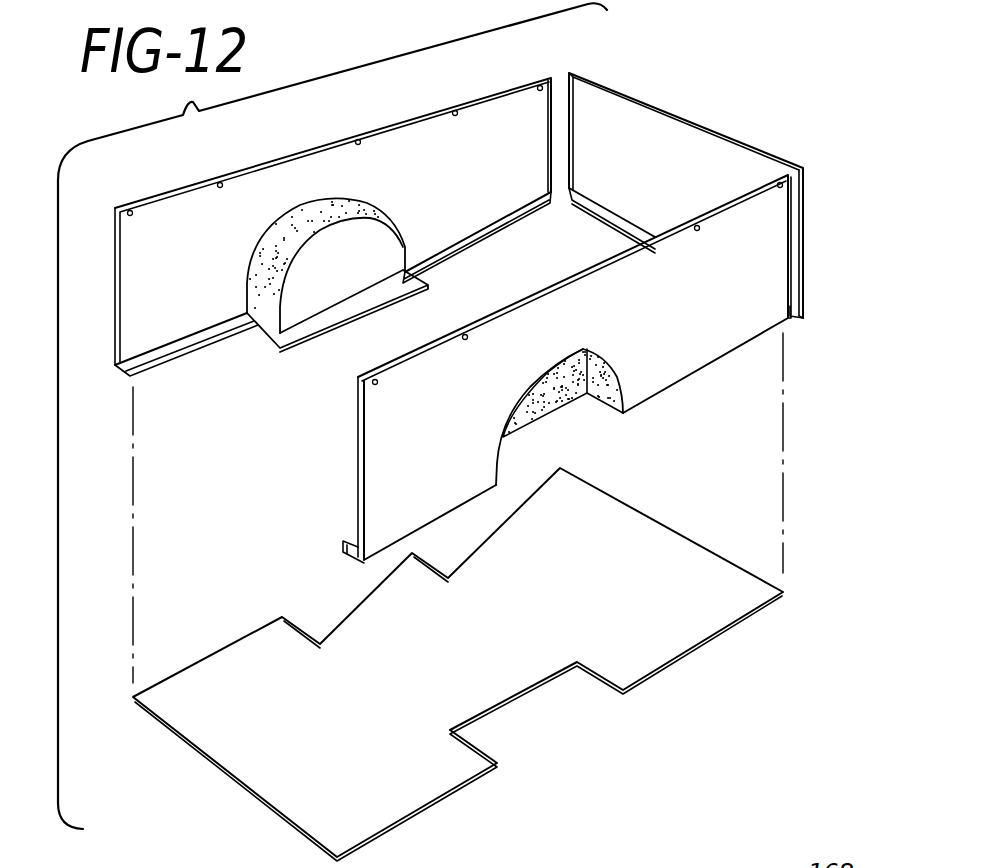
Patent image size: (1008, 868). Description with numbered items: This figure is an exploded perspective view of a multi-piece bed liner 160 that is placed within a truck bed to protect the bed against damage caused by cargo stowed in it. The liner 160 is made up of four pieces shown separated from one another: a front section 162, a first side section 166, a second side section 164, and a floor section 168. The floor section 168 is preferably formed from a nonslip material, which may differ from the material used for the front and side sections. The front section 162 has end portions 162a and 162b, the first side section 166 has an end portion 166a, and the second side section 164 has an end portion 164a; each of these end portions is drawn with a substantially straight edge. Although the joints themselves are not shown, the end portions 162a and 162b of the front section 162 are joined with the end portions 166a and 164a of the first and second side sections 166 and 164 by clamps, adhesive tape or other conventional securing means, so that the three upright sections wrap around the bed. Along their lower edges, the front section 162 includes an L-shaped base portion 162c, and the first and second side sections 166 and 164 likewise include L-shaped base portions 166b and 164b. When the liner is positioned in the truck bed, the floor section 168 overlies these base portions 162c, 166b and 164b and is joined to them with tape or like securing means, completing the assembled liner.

The multi-piece bed liner 160 is at (711, 76).
The front section 162 is at (698, 138).
The end portion of the front section 162a is at (572, 72).
The end portion of the front section 162b is at (803, 190).
The L-shaped base portion 162c is at (603, 213).
The second side section 164 is at (403, 128).
The end portion of the second side section 164a is at (554, 80).
The L-shaped base portion 164b is at (190, 343).
The first side section 166 is at (680, 362).
The end portion of the first side section 166a is at (790, 250).
The L-shaped base portion 166b is at (352, 543).
The floor section 168 is at (686, 635).